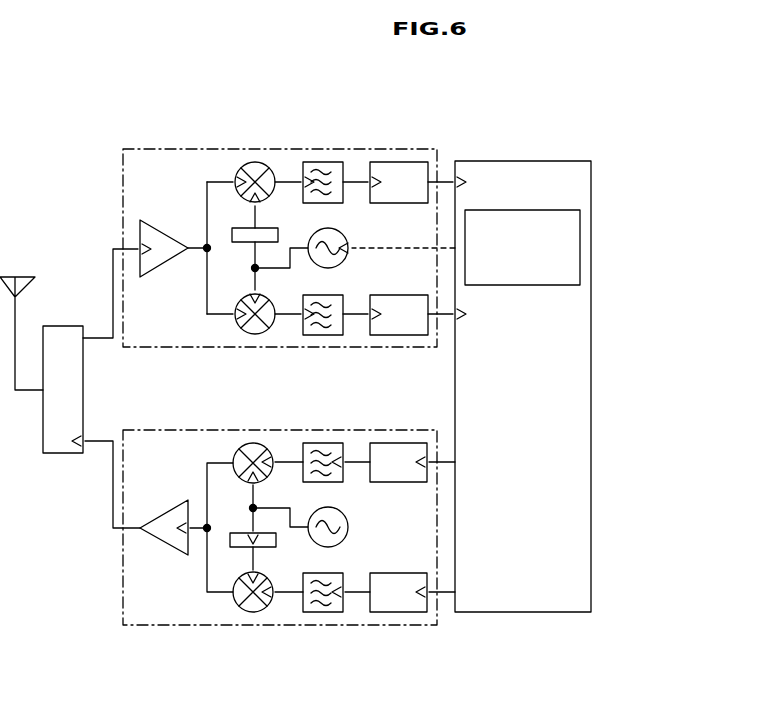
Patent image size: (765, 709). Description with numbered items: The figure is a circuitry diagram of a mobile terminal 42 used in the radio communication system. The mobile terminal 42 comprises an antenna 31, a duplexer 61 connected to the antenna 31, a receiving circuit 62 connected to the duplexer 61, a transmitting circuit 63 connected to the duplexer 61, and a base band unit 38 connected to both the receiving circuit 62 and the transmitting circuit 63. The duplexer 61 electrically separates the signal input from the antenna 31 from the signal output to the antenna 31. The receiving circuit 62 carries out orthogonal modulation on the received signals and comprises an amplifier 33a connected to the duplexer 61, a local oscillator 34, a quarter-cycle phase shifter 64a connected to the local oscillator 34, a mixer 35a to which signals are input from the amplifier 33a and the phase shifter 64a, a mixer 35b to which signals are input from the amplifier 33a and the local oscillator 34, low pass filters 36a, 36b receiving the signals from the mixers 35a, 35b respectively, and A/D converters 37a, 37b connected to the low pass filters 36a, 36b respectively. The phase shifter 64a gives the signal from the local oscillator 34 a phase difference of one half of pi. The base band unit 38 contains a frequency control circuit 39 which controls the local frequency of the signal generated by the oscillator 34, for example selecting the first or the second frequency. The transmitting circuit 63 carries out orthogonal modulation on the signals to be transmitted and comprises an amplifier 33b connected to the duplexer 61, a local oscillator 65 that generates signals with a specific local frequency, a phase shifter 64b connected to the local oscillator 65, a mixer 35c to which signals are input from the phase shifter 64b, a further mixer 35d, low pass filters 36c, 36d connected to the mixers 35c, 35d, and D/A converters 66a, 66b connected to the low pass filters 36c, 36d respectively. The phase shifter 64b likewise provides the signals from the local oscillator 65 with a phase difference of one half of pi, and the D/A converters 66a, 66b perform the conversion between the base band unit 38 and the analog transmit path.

The antenna 31 is at (26, 283).
The amplifier 33a is at (150, 233).
The amplifier 33b is at (175, 512).
The local oscillator 34 is at (343, 243).
The mixer 35a is at (257, 162).
The mixer 35b is at (254, 335).
The mixer 35c is at (257, 444).
The mixer 35d is at (255, 612).
The low pass filter 36a is at (331, 162).
The low pass filter 36b is at (318, 335).
The low pass filter 36c is at (326, 450).
The low pass filter 36d is at (320, 612).
The A/D converter 37a is at (401, 170).
The A/D converter 37b is at (403, 329).
The base band unit 38 is at (594, 190).
The frequency control circuit 39 is at (572, 250).
The mobile terminal 42 is at (528, 141).
The duplexer 61 is at (62, 453).
The receiving circuit 62 is at (123, 190).
The transmitting circuit 63 is at (120, 578).
The π/2 phase shifter 64a is at (233, 248).
The π/2 phase shifter 64b is at (230, 540).
The local oscillator 65 is at (343, 521).
The D/A converter 66a is at (403, 452).
The D/A converter 66b is at (400, 607).